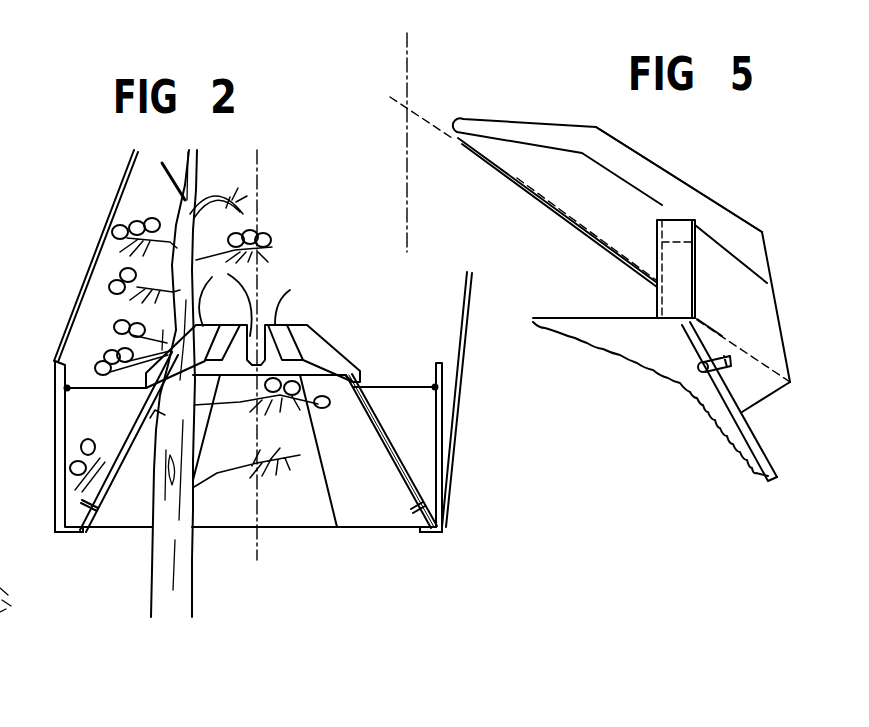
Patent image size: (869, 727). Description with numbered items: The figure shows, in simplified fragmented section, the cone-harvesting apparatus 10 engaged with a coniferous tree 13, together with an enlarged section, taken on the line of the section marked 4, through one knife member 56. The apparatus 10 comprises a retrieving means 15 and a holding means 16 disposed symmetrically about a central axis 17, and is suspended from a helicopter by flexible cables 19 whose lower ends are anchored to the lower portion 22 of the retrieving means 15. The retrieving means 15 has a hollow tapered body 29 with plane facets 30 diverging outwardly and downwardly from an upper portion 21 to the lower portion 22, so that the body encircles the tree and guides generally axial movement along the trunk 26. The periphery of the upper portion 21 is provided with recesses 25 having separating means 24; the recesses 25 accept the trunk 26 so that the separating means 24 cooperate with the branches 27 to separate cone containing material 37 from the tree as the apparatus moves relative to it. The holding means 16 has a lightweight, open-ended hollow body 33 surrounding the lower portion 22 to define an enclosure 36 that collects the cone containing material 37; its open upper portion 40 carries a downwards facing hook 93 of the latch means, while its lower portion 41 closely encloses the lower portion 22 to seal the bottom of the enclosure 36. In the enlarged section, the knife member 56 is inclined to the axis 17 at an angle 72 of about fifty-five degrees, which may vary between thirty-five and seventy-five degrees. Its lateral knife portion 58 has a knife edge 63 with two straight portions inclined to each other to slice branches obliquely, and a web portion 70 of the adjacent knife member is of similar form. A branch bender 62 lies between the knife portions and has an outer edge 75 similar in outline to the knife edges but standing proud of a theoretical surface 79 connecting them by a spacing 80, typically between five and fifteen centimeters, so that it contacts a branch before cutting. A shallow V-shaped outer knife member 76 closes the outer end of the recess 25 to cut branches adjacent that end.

In FIG. 2, the tree 4 is at (6, 211).
In FIG. 2, the apparatus 10 is at (0, 173).
In FIG. 2, the coniferous tree 13 is at (138, 534).
In FIG. 2, the retrieving means 15 is at (400, 446).
In FIG. 5, the retrieving means 15 is at (755, 425).
In FIG. 2, the holding means 16 is at (0, 311).
In FIG. 2, the central axis 17 is at (258, 172).
In FIG. 5, the central axis 17 is at (405, 67).
In FIG. 2, the flexible cables 19 is at (120, 177).
In FIG. 2, the upper portion 21 is at (378, 381).
In FIG. 5, the upper portion 21 is at (710, 140).
In FIG. 2, the lower portion 22 is at (0, 394).
In FIG. 2, the separating means 24 is at (281, 332).
In FIG. 5, the separating means 24 is at (721, 206).
In FIG. 2, the recesses 25 is at (236, 288).
In FIG. 2, the trunk 26 is at (173, 563).
In FIG. 2, the branches 27 is at (268, 240).
In FIG. 2, the hollow tapered body 29 is at (390, 441).
In FIG. 5, the hollow tapered body 29 is at (733, 399).
In FIG. 2, the facets 30 is at (142, 402).
In FIG. 2, the hollow body 33 is at (442, 407).
In FIG. 2, the enclosure 36 is at (72, 455).
In FIG. 2, the cone containing material 37 is at (93, 445).
In FIG. 2, the upper portion 40 is at (72, 386).
In FIG. 2, the lower portion 41 is at (394, 528).
In FIG. 5, the knife member 56 is at (537, 118).
In FIG. 5, the knife portion 58 is at (556, 178).
In FIG. 5, the branch bender 62 is at (710, 224).
In FIG. 5, the knife edge 63 is at (663, 205).
In FIG. 5, the web portion 70 is at (536, 191).
In FIG. 5, the angle 72 is at (419, 177).
In FIG. 5, the outer edge 75 is at (703, 196).
In FIG. 5, the outer knife member 76 is at (678, 268).
In FIG. 5, the theoretical surface 79 is at (731, 254).
In FIG. 5, the spacing 80 is at (622, 177).
In FIG. 2, the hook 93 is at (0, 291).